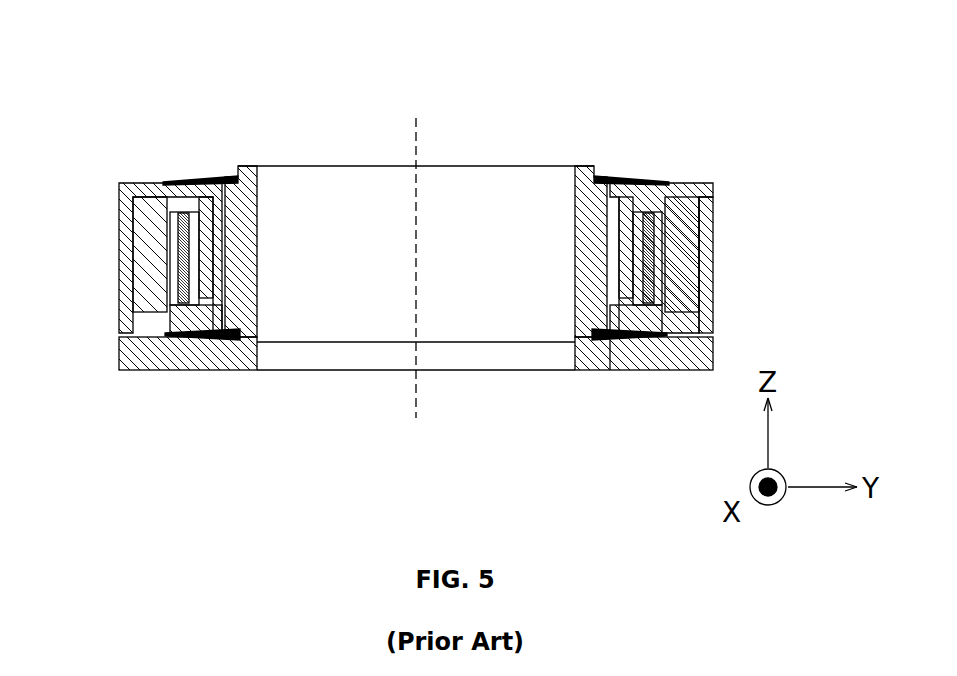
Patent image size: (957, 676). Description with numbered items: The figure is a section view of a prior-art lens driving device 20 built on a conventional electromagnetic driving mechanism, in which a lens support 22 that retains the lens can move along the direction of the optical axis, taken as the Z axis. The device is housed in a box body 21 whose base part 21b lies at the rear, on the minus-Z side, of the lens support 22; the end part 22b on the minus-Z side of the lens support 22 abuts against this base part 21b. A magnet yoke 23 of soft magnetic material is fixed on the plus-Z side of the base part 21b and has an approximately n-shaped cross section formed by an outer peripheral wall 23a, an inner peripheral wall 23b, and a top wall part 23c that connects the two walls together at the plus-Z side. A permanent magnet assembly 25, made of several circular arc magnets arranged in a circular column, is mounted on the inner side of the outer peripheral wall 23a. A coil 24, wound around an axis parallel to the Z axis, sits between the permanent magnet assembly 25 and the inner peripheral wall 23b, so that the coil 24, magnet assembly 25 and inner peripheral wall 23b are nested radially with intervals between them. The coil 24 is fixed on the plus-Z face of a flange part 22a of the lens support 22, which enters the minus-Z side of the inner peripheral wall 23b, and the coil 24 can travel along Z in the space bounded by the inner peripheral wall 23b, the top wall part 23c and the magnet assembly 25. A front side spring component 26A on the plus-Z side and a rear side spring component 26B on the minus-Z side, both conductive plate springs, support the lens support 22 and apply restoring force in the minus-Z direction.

The lens driving device 20 is at (237, 92).
The box body 21 is at (168, 370).
The base part 21b is at (223, 370).
The lens support 22 is at (590, 218).
The flange part 22a is at (657, 323).
The end part 22b is at (262, 343).
The magnet yoke 23 is at (121, 198).
The outer peripheral wall 23a is at (715, 268).
The inner peripheral wall 23b is at (715, 237).
The top wall part 23c is at (673, 187).
The coil 24 is at (177, 296).
The permanent magnet assembly 25 is at (133, 248).
The front side spring component 26A is at (617, 178).
The rear side spring component 26B is at (610, 370).